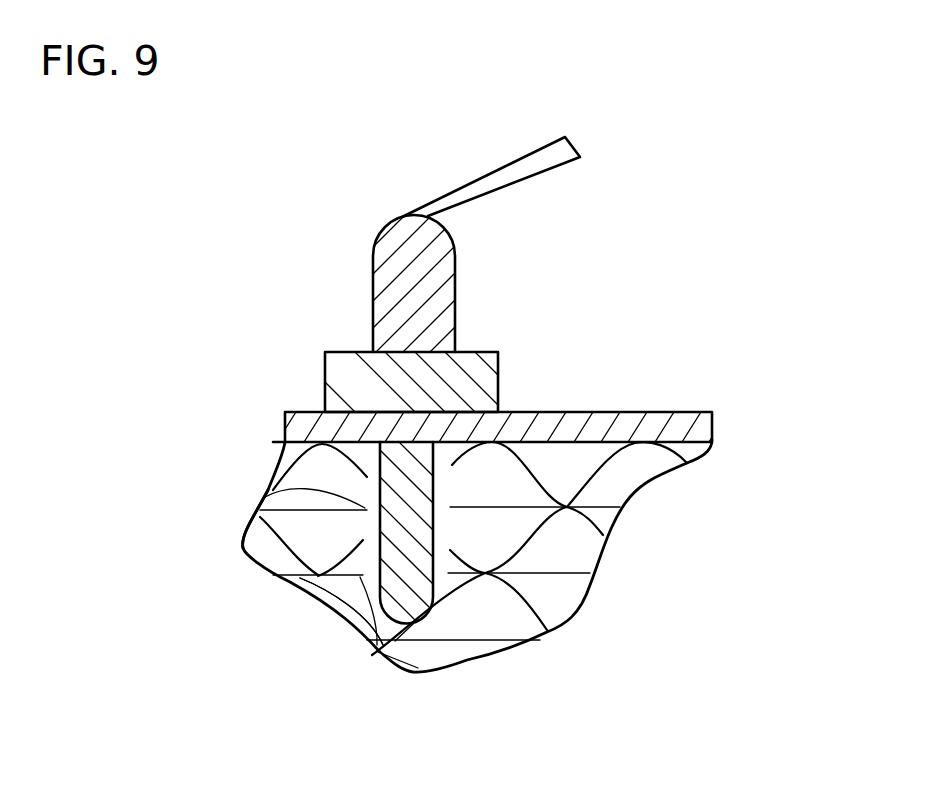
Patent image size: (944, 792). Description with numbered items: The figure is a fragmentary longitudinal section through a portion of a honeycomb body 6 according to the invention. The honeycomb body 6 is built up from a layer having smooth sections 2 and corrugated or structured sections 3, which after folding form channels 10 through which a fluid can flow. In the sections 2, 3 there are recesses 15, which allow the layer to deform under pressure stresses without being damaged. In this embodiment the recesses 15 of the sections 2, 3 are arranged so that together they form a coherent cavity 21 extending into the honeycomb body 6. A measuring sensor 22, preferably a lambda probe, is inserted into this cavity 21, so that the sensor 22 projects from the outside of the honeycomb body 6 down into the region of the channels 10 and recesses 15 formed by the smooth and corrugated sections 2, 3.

The honeycomb body 6 is at (297, 407).
The measuring sensor 22 is at (377, 237).
The coherent cavity 21 is at (423, 668).
The channels 10 is at (578, 457).
The recesses 15 is at (263, 498).
The corrugated section 3 is at (288, 585).
The smooth section 2 is at (358, 580).